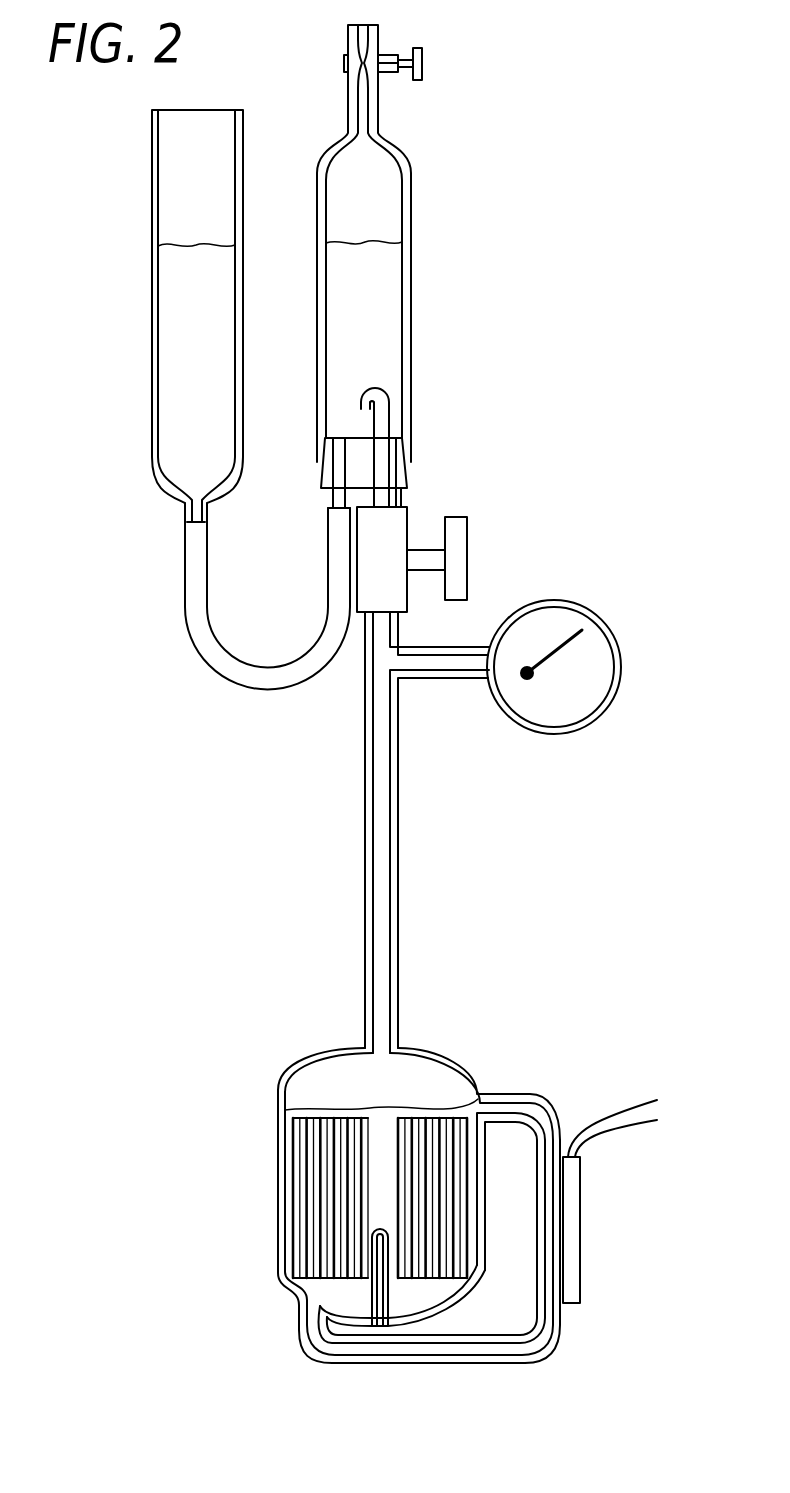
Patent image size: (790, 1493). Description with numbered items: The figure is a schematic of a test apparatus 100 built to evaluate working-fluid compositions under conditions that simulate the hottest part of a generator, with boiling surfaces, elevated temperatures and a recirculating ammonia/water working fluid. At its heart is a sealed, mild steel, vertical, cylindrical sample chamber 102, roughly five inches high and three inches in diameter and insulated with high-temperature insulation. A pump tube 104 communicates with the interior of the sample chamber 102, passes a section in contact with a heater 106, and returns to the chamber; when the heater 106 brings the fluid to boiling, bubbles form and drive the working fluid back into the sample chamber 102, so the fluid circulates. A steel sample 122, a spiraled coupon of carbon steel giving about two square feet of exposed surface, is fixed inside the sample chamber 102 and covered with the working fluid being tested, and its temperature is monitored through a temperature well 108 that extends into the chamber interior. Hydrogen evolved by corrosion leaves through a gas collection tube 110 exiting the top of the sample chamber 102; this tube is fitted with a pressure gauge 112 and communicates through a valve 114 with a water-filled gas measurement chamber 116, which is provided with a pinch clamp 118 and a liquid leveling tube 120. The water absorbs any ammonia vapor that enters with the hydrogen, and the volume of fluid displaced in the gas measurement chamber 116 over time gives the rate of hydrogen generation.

The test apparatus 100 is at (303, 925).
The sample chamber 102 is at (287, 1082).
The pump tube 104 is at (618, 1310).
The heater 106 is at (625, 1183).
The temperature well 108 is at (475, 1310).
The gas collection tube 110 is at (440, 838).
The pressure gauge 112 is at (630, 745).
The valve 114 is at (508, 512).
The gas measurement chamber 116 is at (463, 240).
The pinch clamp 118 is at (465, 75).
The liquid leveling tube 120 is at (152, 290).
The steel sample 122 is at (295, 1208).